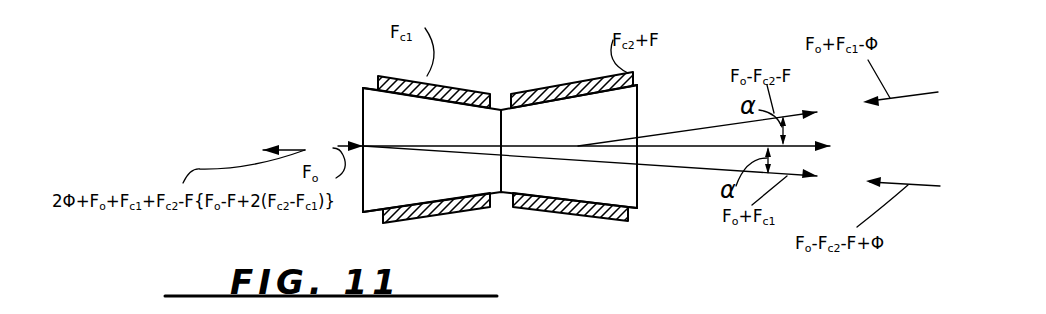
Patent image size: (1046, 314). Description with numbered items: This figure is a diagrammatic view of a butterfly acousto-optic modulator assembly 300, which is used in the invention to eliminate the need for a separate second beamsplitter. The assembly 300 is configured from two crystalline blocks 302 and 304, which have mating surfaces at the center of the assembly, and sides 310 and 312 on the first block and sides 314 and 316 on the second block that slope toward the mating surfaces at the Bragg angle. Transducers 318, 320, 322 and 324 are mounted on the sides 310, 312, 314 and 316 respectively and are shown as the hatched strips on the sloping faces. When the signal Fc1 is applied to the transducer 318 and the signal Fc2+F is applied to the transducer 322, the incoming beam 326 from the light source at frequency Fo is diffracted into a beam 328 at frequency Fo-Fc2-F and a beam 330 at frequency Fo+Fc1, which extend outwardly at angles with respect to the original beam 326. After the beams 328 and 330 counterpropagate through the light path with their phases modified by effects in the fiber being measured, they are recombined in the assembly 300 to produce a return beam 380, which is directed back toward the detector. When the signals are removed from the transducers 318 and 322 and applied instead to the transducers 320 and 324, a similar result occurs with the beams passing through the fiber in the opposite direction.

The acousto-optic modulator assembly 300 is at (502, 100).
The crystalline block 302 is at (362, 100).
The crystalline block 304 is at (639, 92).
The side 310 is at (376, 88).
The side 312 is at (372, 214).
The side 314 is at (635, 86).
The side 316 is at (632, 222).
The transducer 318 is at (487, 90).
The transducer 320 is at (418, 224).
The transducer 322 is at (591, 90).
The transducer 324 is at (540, 207).
The beam 326 is at (356, 144).
The beam 328 is at (735, 125).
The beam 330 is at (701, 170).
The return beam 380 is at (288, 147).